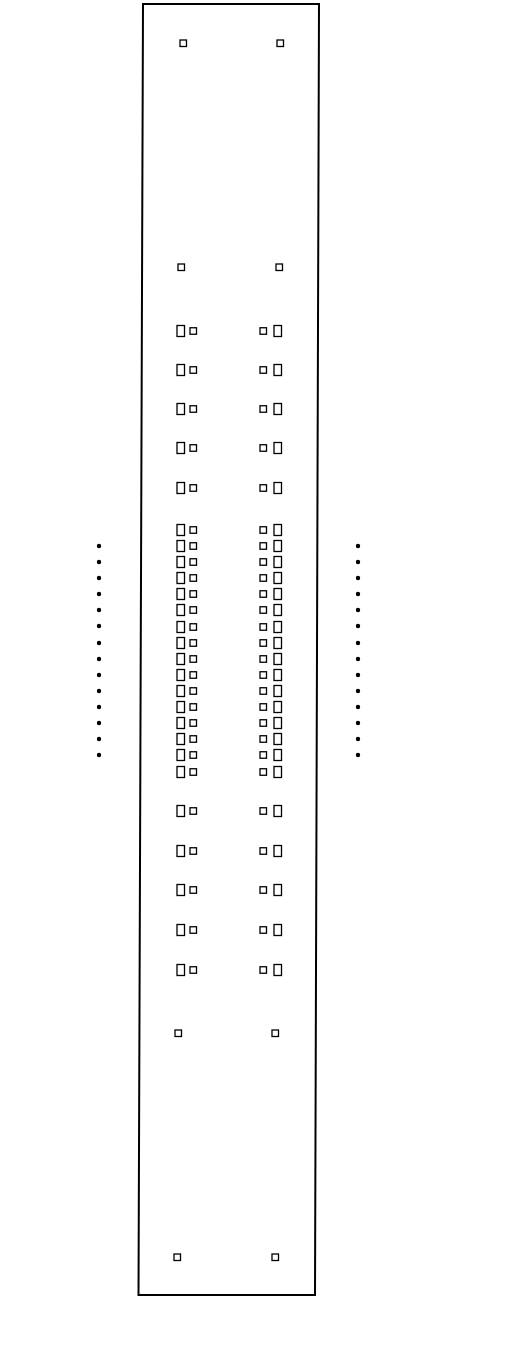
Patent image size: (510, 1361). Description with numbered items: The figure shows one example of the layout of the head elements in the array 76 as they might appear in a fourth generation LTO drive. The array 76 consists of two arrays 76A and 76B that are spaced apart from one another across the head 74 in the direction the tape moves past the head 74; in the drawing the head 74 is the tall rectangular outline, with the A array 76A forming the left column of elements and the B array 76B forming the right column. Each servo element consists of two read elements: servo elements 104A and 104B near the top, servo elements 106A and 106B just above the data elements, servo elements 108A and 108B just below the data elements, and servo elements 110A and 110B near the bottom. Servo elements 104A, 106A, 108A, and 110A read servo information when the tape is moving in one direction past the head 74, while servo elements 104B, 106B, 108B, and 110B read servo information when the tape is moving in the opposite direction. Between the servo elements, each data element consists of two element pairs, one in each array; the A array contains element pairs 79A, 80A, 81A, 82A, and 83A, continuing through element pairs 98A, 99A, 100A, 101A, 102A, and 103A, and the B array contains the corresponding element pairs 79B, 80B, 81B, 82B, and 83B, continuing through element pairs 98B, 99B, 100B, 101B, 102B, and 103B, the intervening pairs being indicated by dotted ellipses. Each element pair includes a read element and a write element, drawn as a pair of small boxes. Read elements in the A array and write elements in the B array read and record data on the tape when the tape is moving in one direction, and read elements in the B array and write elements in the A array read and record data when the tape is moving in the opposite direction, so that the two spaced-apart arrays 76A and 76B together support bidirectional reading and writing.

The head 74 is at (304, 1205).
The array 76 is at (230, 198).
The array 76A is at (205, 274).
The array 76B is at (256, 279).
The element pair 79A is at (176, 370).
The element pair 80A is at (176, 409).
The element pair 81A is at (176, 448).
The element pair 82A is at (176, 488).
The element pair 83A is at (176, 531).
The element pair 98A is at (176, 772).
The element pair 99A is at (176, 811).
The element pair 100A is at (176, 851).
The element pair 101A is at (176, 890).
The element pair 102A is at (176, 930).
The element pair 103A is at (176, 970).
The element pair 79B is at (282, 370).
The element pair 80B is at (282, 409).
The element pair 81B is at (282, 448).
The element pair 82B is at (282, 488).
The element pair 83B is at (282, 531).
The element pair 98B is at (282, 772).
The element pair 99B is at (282, 811).
The element pair 100B is at (282, 851).
The element pair 101B is at (282, 890).
The element pair 102B is at (282, 930).
The element pair 103B is at (282, 970).
The servo element 104A is at (180, 44).
The servo element 104B is at (283, 44).
The servo element 106A is at (178, 268).
The servo element 106B is at (282, 268).
The servo element 108A is at (175, 1034).
The servo element 108B is at (278, 1034).
The servo element 110A is at (174, 1258).
The servo element 110B is at (278, 1258).